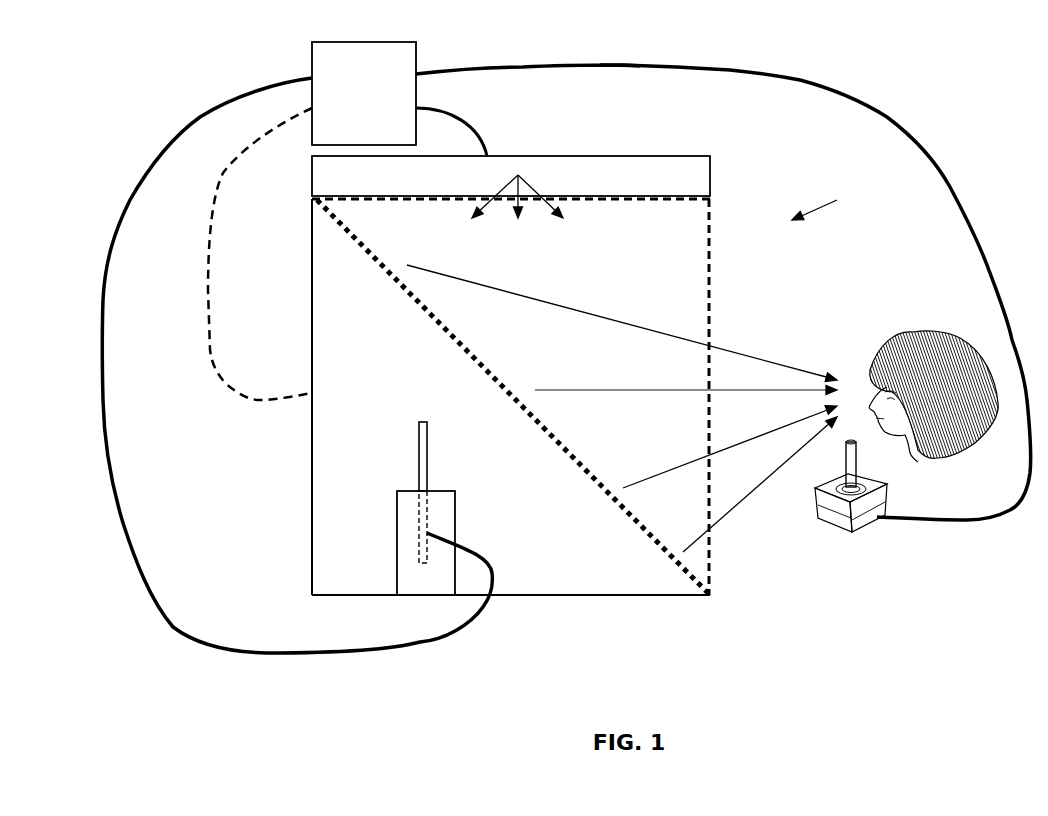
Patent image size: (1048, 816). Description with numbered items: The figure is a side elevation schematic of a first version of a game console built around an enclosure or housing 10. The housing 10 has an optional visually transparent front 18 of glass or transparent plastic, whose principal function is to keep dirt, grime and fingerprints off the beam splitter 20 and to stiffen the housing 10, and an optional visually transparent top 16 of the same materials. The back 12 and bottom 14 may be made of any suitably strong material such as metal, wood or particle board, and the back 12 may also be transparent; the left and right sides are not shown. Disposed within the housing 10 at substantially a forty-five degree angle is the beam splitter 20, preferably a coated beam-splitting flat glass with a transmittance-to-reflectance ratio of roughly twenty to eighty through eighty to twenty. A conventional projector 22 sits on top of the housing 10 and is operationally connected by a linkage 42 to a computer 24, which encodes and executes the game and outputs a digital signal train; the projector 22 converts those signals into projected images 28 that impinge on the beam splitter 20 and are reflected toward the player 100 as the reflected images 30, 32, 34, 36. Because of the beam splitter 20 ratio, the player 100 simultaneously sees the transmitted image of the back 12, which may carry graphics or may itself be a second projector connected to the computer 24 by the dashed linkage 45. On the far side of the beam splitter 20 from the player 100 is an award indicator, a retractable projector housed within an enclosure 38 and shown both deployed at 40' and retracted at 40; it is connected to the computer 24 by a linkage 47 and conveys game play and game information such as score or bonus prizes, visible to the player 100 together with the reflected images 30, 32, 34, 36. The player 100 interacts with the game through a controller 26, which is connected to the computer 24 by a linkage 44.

The housing 10 is at (828, 204).
The back 12 is at (310, 540).
The bottom 14 is at (582, 597).
The top 16 is at (637, 202).
The front 18 is at (710, 228).
The beam splitter 20 is at (343, 226).
The projector 22 is at (587, 190).
The computer 24 is at (353, 106).
The controller 26 is at (852, 531).
The projected images 28 is at (446, 225).
The reflected image 30 is at (620, 323).
The reflected image 32 is at (557, 390).
The reflected image 34 is at (653, 478).
The reflected image 36 is at (685, 549).
The enclosure 38 is at (412, 590).
The award indicator 40 is at (384, 532).
The award indicator 40' is at (385, 481).
The linkage 42 is at (485, 133).
The linkage 44 is at (638, 70).
The dashed linkage 45 is at (208, 352).
The linkage 47 is at (120, 520).
The player 100 is at (923, 333).